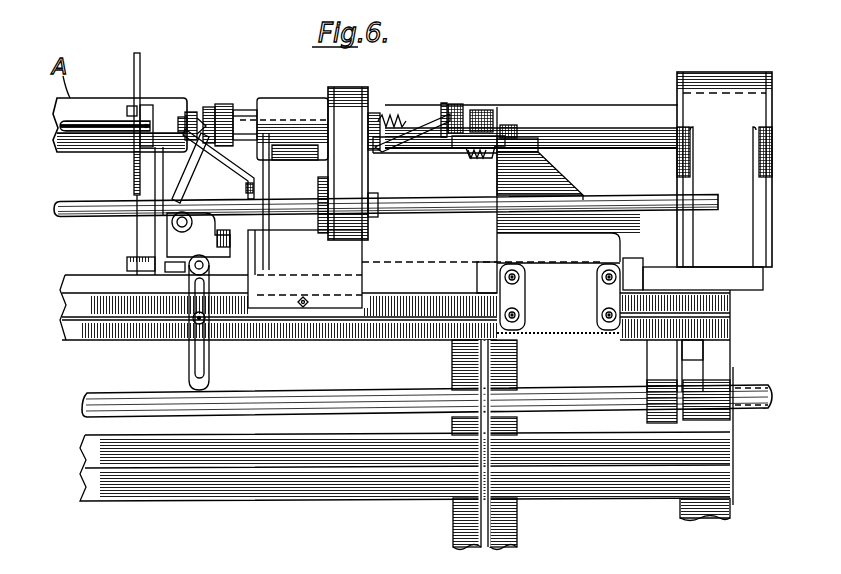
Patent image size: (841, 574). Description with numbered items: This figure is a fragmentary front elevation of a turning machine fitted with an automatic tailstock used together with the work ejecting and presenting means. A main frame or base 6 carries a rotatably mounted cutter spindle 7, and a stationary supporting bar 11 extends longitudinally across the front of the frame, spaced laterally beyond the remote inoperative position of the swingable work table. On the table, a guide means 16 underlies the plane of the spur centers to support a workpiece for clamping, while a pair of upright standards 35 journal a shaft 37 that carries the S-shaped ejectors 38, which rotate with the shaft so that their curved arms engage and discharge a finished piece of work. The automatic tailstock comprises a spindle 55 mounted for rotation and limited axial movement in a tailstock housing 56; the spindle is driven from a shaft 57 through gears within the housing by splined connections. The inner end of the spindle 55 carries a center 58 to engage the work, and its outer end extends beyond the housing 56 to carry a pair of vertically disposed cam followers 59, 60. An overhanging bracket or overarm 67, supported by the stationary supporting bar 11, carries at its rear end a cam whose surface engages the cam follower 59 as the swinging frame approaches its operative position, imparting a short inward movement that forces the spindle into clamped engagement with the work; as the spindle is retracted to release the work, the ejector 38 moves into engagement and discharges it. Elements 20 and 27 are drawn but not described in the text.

The main frame or base 6 is at (441, 496).
The cutter spindle 7 is at (614, 118).
The stationary supporting bar 11 is at (356, 320).
The guide means 16 is at (199, 177).
The bearing 20 is at (172, 221).
The lever 27 is at (196, 272).
The upright standard 35 is at (127, 283).
The shaft 37 is at (98, 120).
The ejector 38 is at (138, 56).
The spindle 55 is at (212, 106).
The tailstock housing 56 is at (312, 104).
The shaft 57 is at (429, 212).
The center 58 is at (190, 124).
The cam follower 59 is at (494, 118).
The cam follower 60 is at (456, 154).
The overhanging bracket or overarm 67 is at (595, 237).